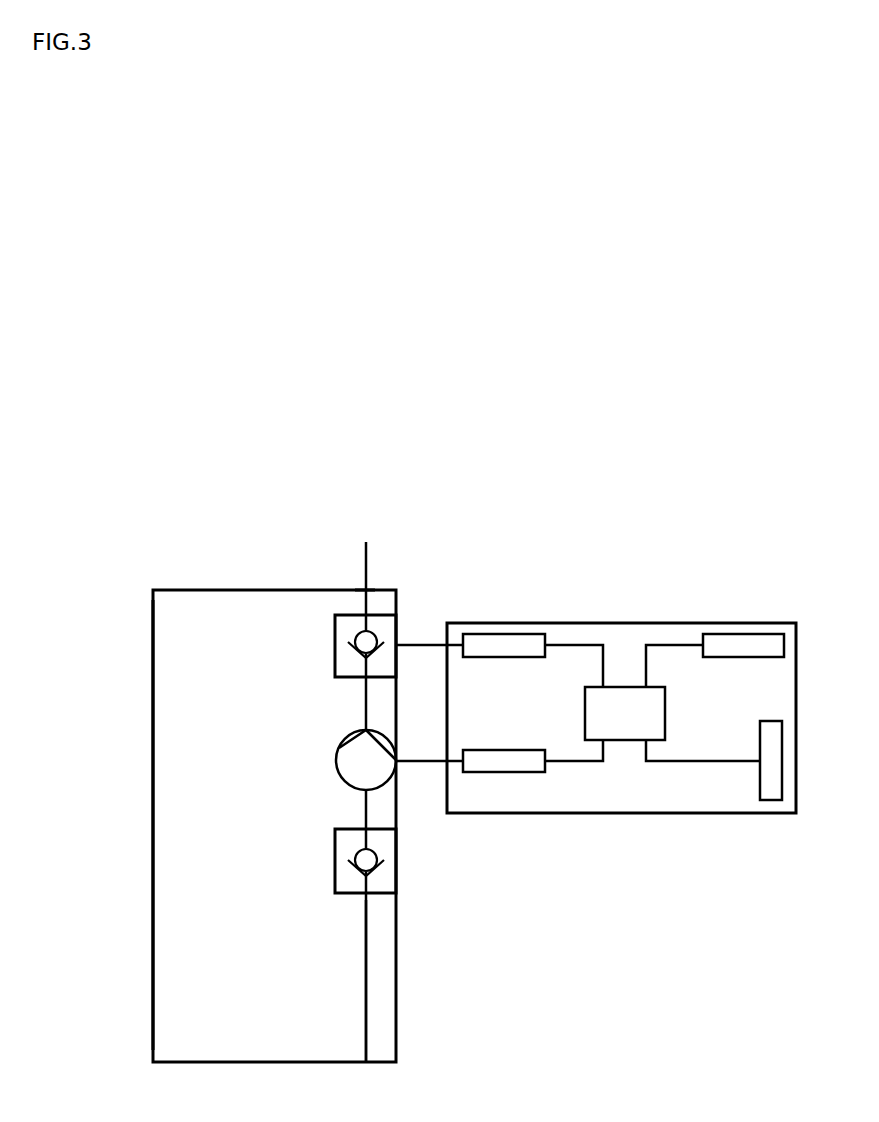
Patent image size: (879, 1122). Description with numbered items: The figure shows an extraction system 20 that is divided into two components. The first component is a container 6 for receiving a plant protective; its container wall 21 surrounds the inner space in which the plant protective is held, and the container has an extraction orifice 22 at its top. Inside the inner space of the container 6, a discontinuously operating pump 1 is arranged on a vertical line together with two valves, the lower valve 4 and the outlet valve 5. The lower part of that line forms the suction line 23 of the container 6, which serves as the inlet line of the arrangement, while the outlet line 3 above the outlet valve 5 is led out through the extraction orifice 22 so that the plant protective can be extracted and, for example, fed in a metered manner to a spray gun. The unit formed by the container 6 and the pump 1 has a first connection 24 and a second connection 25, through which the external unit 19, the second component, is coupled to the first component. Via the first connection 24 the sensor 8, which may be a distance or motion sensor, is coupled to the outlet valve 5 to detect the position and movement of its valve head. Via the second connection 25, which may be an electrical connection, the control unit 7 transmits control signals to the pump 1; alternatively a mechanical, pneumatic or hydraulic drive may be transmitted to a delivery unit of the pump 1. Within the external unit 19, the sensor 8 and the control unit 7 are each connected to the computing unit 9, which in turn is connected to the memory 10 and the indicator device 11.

The discontinuously operating pump 1 is at (340, 770).
The outlet line 3 is at (366, 552).
The valve 4 is at (340, 880).
The outlet valve 5 is at (340, 660).
The container 6 is at (222, 822).
The control unit 7 is at (498, 765).
The sensor 8 is at (493, 640).
The computing unit 9 is at (628, 724).
The memory 10 is at (742, 637).
The indicator device 11 is at (772, 790).
The external unit 19 is at (671, 592).
The extraction system 20 is at (203, 572).
The container wall 21 is at (152, 783).
The extraction orifice 22 is at (360, 589).
The suction line 23 is at (367, 957).
The first connection 24 is at (398, 642).
The second connection 25 is at (399, 763).